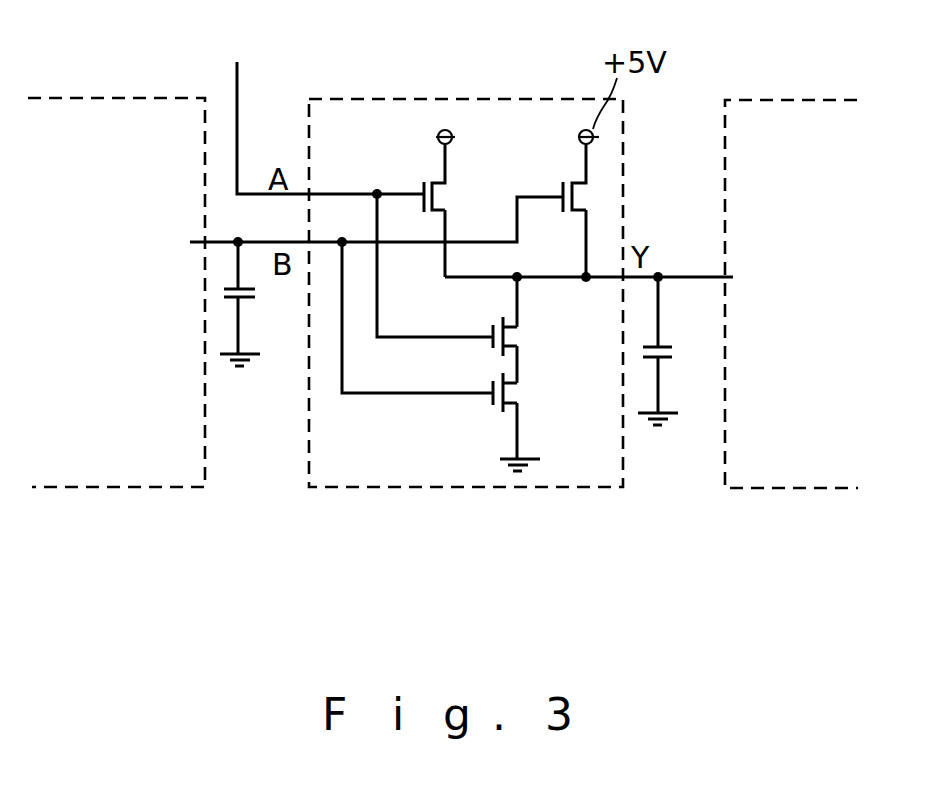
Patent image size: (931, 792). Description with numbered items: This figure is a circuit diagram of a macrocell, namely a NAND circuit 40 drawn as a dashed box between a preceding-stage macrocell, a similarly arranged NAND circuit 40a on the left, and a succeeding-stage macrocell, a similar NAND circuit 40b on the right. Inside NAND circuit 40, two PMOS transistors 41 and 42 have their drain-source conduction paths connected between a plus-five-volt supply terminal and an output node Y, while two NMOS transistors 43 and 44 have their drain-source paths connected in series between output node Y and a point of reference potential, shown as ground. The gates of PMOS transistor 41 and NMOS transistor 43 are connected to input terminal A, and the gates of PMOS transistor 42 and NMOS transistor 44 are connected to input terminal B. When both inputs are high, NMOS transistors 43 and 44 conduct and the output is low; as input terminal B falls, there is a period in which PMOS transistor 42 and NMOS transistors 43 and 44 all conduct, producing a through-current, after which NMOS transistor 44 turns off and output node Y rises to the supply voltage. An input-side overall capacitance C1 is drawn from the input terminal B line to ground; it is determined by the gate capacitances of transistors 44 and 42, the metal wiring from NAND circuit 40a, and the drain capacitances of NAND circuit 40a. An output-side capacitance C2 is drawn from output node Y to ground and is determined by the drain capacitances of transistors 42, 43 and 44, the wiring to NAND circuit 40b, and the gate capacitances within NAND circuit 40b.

The NAND circuit 40 is at (485, 98).
The NAND circuit in the preceding stage 40a is at (117, 98).
The NAND circuit in the succeeding stage 40b is at (788, 100).
The PMOS transistor 41 is at (447, 195).
The PMOS transistor 42 is at (577, 175).
The NMOS transistor 43 is at (520, 342).
The NMOS transistor 44 is at (522, 397).
The input-side overall capacitance C1 is at (247, 298).
The output-side capacitance C2 is at (675, 350).